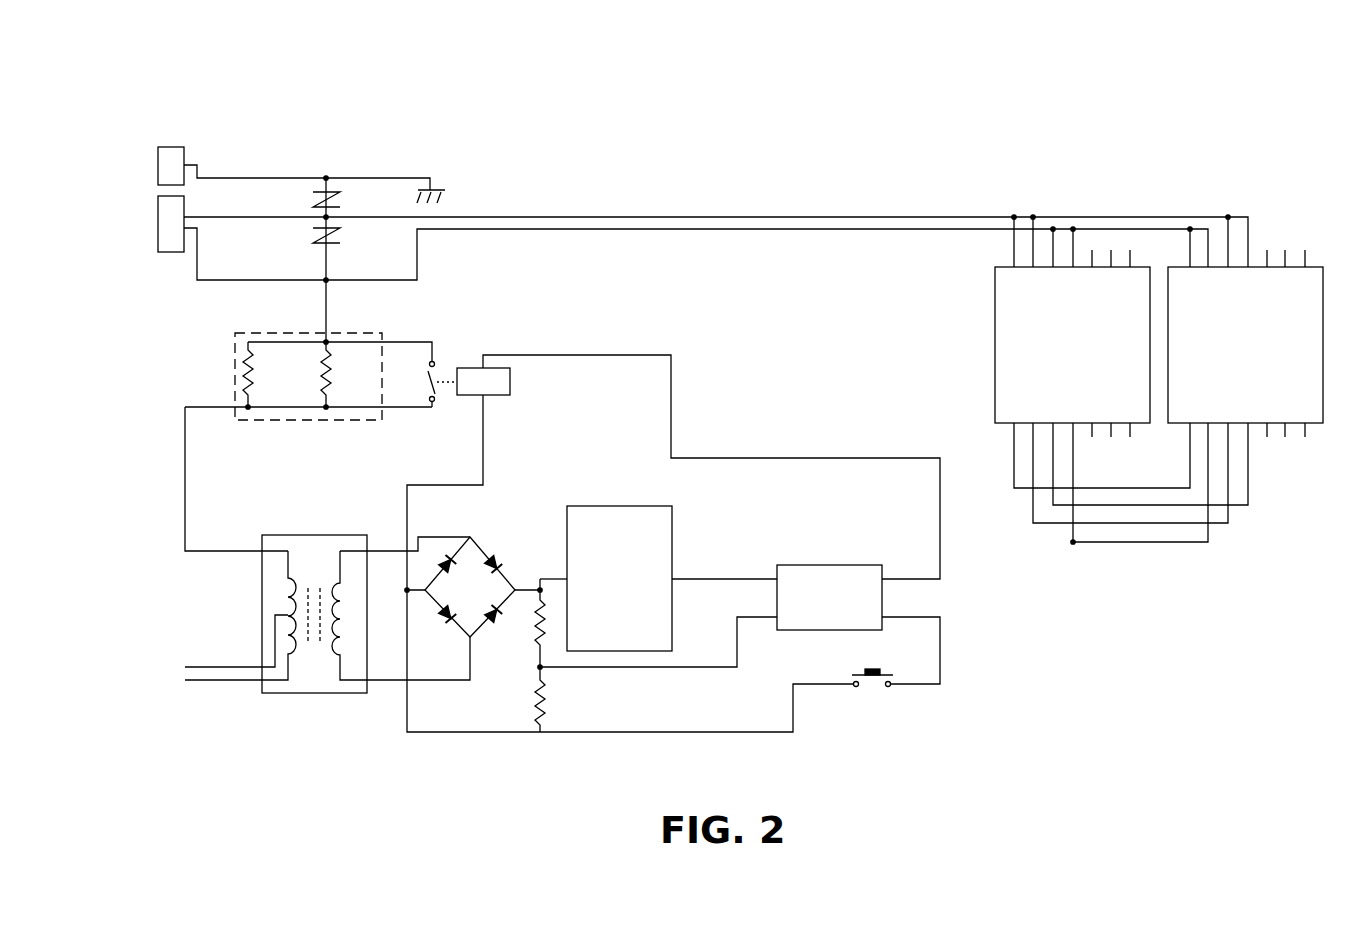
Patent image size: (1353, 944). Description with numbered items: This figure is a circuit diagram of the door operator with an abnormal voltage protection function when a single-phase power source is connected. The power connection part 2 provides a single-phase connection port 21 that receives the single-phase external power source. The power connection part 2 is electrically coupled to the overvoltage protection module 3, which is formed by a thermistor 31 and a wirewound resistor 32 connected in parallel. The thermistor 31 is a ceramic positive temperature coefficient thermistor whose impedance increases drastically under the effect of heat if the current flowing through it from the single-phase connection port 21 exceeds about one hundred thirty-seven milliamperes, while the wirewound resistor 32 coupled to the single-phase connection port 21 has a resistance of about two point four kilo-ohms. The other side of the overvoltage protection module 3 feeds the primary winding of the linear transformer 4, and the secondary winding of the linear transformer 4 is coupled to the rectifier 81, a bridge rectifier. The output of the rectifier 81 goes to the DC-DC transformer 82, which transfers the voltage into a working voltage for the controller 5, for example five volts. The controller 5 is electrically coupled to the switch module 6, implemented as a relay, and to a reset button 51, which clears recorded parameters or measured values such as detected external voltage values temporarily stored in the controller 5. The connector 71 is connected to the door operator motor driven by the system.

The power connection part 2 is at (144, 168).
The single-phase connection port 21 is at (154, 191).
The overvoltage protection module 3 is at (294, 360).
The thermistor 31 is at (345, 368).
The wirewound resistor 32 is at (243, 380).
The switch module 6 is at (439, 370).
The linear transformer 4 is at (330, 693).
The rectifier 81 is at (492, 630).
The DC-DC transformer 82 is at (681, 631).
The controller 5 is at (832, 565).
The reset button 51 is at (873, 692).
The connector 71 is at (1284, 217).